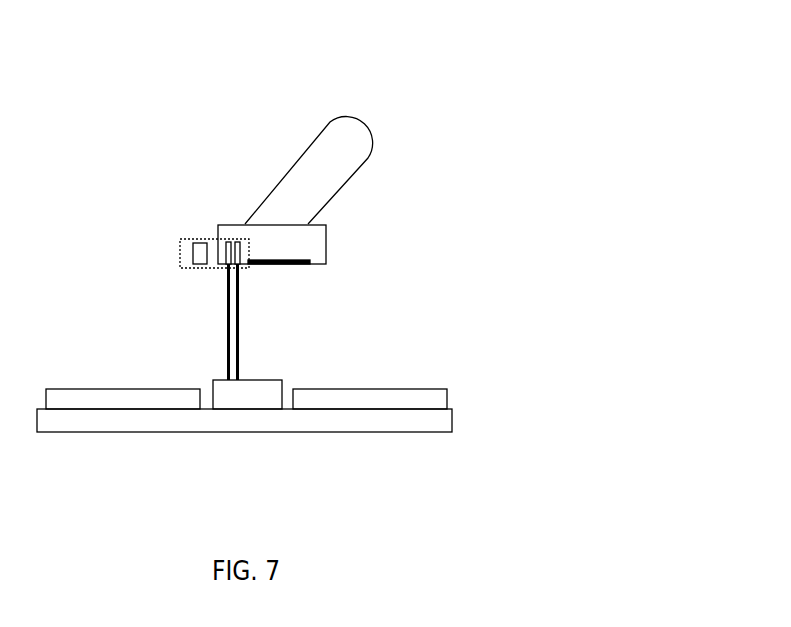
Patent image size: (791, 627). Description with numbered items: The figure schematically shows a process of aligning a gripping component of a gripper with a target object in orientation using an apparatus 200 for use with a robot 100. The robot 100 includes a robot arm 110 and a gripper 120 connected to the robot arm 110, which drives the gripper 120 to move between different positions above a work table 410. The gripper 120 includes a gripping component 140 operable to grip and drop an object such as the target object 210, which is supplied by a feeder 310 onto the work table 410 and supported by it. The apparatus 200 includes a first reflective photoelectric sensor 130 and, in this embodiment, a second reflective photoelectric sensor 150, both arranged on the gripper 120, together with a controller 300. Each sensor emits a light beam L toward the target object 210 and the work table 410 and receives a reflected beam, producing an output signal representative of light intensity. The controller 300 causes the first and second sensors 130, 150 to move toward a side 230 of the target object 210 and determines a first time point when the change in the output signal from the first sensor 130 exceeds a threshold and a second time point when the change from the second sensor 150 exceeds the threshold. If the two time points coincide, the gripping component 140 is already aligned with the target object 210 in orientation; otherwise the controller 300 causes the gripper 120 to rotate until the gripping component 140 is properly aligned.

The robot 100 is at (260, 157).
The robot arm 110 is at (348, 116).
The gripper 120 is at (326, 243).
The first reflective photoelectric sensor 130 is at (228, 247).
The gripping component 140 is at (268, 258).
The second reflective photoelectric sensor 150 is at (238, 243).
The apparatus 200 is at (180, 253).
The target object 210 is at (285, 380).
The side of the target object 230 is at (228, 390).
The controller 300 is at (199, 264).
The feeder 310 is at (78, 389).
The work table 410 is at (235, 432).
The light beam L is at (218, 308).